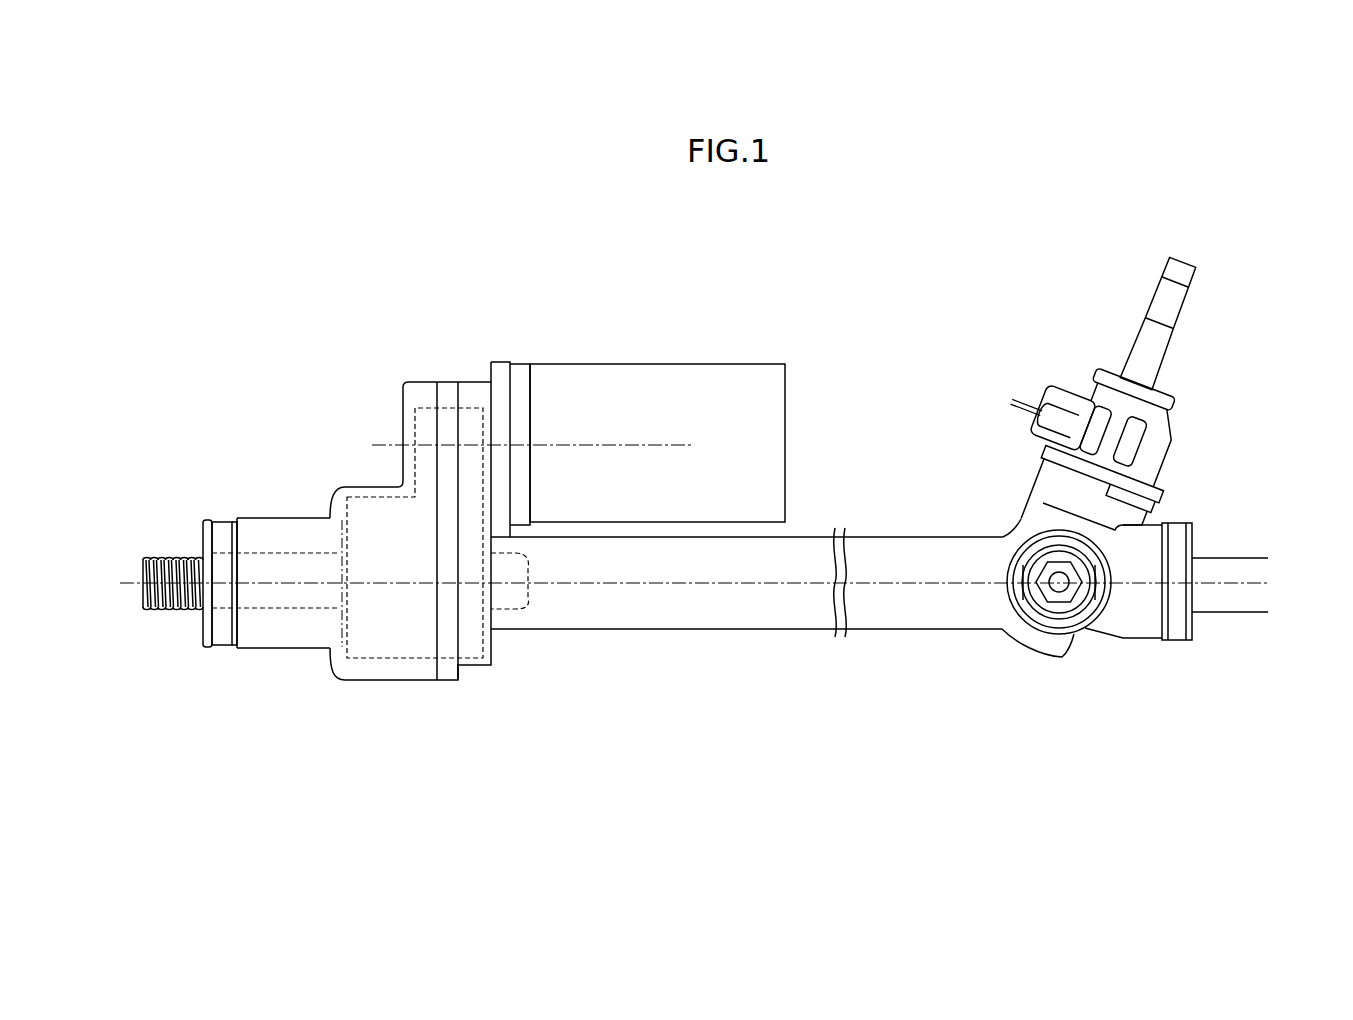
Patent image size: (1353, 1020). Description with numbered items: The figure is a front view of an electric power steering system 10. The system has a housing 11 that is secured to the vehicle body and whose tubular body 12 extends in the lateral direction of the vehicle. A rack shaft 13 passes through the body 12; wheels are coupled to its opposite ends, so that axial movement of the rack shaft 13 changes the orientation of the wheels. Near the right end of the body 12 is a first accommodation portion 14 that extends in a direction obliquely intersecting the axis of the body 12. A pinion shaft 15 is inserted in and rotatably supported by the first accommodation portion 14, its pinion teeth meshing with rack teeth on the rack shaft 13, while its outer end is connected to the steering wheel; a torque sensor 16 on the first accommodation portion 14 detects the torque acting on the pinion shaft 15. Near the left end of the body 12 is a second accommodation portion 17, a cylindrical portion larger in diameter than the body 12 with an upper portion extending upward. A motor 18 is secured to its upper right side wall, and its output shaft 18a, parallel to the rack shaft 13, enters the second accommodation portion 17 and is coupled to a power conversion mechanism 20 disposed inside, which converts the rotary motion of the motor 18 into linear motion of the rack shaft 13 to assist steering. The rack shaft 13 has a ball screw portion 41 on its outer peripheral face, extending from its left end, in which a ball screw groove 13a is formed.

The electric power steering system 10 is at (211, 292).
The housing 11 is at (662, 632).
The body 12 is at (596, 631).
The rack shaft 13 is at (1223, 552).
The ball screw groove 13a is at (167, 612).
The first accommodation portion 14 is at (1047, 475).
The pinion shaft 15 is at (1173, 336).
The torque sensor 16 is at (277, 519).
The second accommodation portion 17 is at (436, 681).
The motor 18 is at (670, 363).
The output shaft 18a is at (484, 405).
The power conversion mechanism 20 is at (365, 665).
The ball screw portion 41 is at (160, 553).